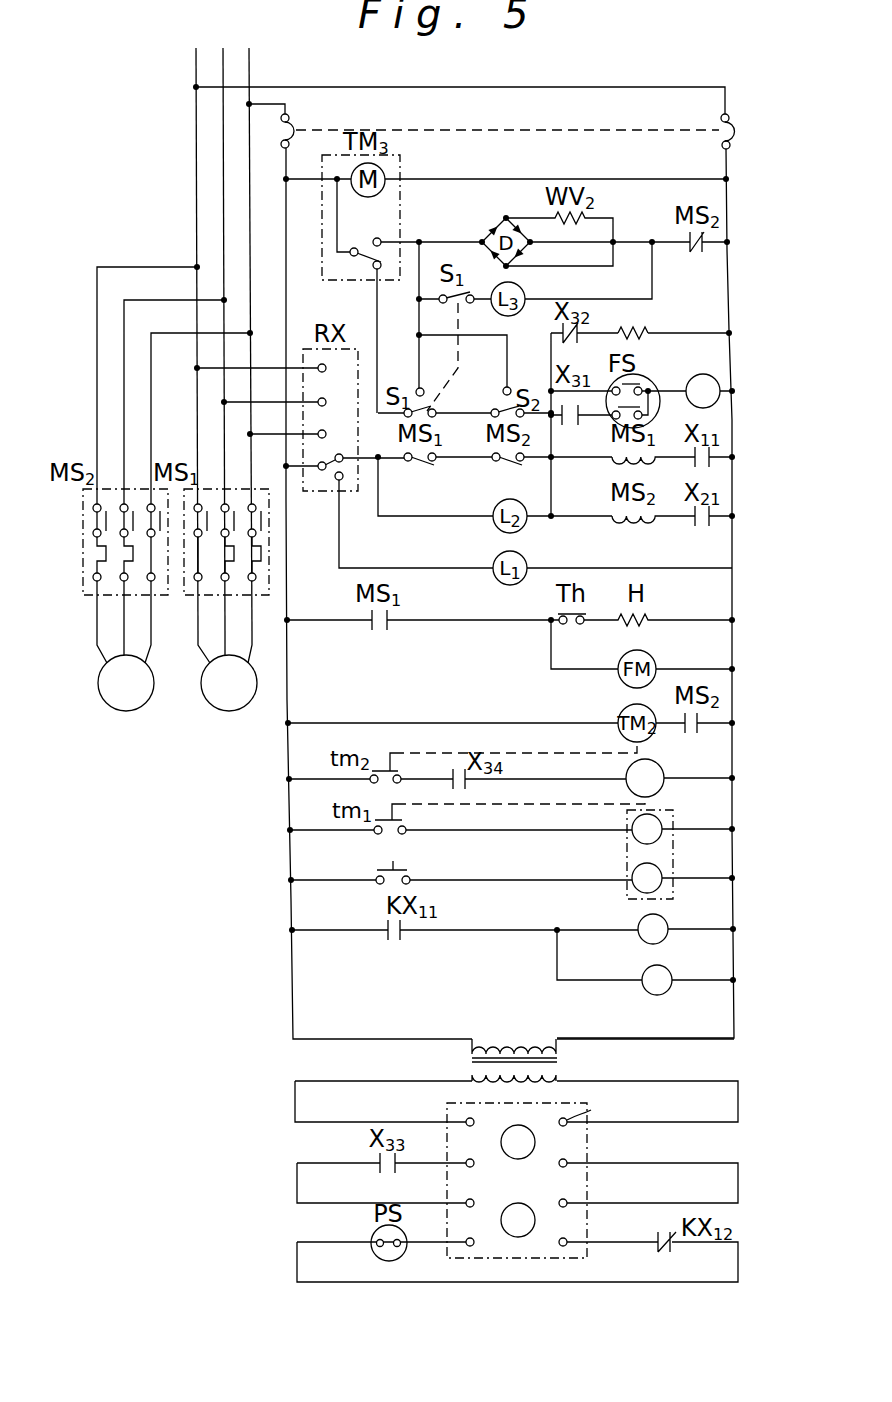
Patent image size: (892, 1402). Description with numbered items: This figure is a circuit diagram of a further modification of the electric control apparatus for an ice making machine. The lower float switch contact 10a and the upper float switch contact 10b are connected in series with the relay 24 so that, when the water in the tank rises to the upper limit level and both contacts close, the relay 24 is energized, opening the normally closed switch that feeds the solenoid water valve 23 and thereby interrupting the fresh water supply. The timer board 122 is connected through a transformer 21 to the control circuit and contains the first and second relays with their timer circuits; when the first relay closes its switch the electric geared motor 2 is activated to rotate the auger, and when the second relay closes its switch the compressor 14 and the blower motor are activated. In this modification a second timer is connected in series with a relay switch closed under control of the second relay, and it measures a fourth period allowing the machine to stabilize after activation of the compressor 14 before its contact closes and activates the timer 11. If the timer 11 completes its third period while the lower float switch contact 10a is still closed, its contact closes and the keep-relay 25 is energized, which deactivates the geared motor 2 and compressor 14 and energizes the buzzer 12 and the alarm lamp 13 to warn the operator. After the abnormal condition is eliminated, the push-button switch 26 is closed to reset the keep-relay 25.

The electric geared motor 2 is at (229, 711).
The compressor 14 is at (126, 711).
The solenoid water valve 23 is at (650, 330).
The relay 24 is at (720, 380).
The normally open switch of lower float switch 10a is at (628, 417).
The normally open switch of upper float switch 10b is at (642, 381).
The timer 11 is at (662, 765).
The keep-relay 25 is at (673, 815).
The buzzer 12 is at (666, 917).
The alarm lamp 13 is at (670, 988).
The push-button switch 26 is at (392, 888).
The transformer 21 is at (560, 1062).
The timer board 122 is at (518, 1262).